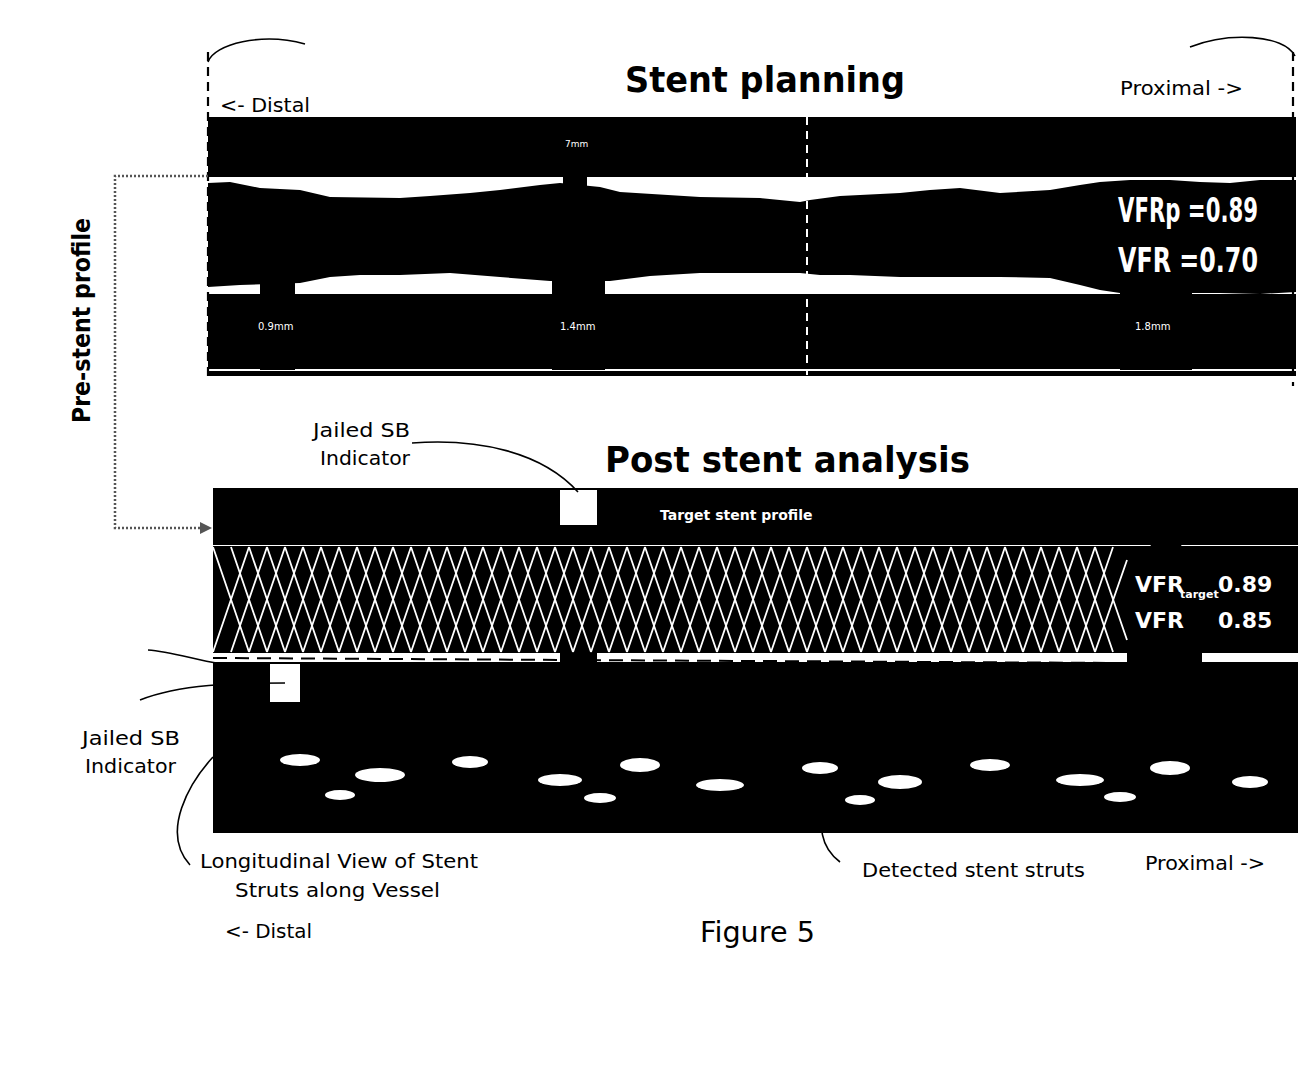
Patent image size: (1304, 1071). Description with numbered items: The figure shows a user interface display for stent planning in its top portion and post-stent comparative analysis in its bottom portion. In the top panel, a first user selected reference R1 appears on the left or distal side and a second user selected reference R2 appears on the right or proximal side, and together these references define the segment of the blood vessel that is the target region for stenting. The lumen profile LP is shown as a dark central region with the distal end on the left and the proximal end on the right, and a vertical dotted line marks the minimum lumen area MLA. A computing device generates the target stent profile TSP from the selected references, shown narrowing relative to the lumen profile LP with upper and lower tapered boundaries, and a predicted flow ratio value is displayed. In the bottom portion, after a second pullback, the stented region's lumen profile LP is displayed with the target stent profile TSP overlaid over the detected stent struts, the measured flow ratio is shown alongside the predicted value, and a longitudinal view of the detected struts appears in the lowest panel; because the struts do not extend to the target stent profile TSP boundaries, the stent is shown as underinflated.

The first user selected reference R1 is at (280, 52).
The second user selected reference R2 is at (1208, 42).
The minimum lumen area MLA is at (807, 148).
The target stent profile TSP is at (392, 198).
The lumen profile LP is at (450, 243).